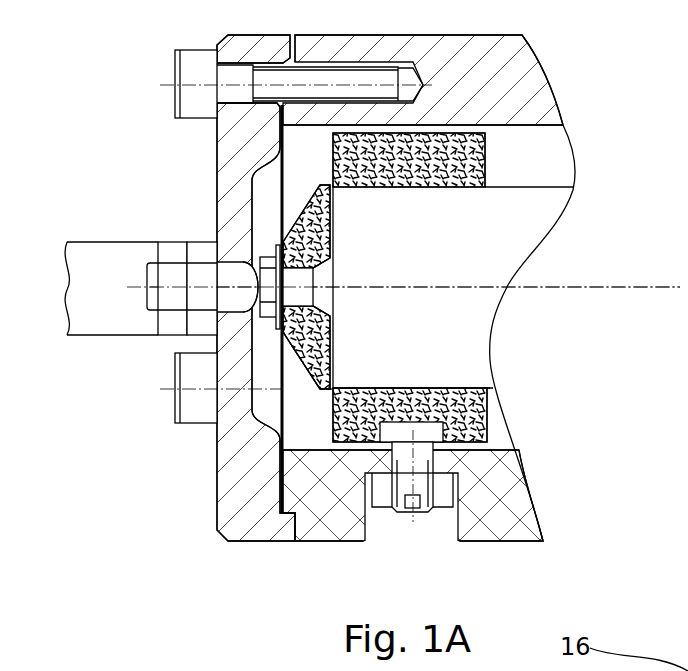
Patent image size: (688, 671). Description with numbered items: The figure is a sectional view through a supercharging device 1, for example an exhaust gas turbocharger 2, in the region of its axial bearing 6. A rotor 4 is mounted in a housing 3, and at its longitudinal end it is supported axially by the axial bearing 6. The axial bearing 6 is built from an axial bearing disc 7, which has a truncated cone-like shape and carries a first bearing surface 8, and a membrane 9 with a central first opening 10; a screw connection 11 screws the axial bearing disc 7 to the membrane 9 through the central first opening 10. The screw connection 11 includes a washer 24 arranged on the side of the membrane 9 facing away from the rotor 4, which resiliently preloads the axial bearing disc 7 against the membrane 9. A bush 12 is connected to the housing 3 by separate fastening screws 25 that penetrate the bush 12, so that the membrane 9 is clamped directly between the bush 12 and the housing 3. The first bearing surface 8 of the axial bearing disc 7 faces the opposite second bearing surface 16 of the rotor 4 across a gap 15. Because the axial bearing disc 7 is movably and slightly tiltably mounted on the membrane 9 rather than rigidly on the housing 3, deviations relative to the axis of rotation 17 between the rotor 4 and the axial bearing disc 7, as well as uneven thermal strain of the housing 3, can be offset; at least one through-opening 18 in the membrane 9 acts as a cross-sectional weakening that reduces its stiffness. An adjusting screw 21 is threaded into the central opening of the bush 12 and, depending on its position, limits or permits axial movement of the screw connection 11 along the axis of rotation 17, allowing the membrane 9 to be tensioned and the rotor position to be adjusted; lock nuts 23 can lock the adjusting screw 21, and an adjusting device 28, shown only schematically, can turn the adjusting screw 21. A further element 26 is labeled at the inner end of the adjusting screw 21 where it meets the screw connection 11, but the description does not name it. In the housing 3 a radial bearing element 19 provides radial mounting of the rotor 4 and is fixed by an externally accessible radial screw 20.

The supercharging device 1 is at (459, 270).
The exhaust gas turbocharger 2 is at (459, 270).
The housing 3 is at (470, 58).
The rotor 4 is at (526, 222).
The axial bearing 6 is at (305, 372).
The axial bearing disc 7 is at (282, 195).
The first bearing surface 8 is at (332, 198).
The membrane 9 is at (277, 148).
The central first opening 10 is at (330, 280).
The screw connection 11 is at (327, 303).
The bush 12 is at (236, 520).
The gap 15 is at (322, 392).
The second bearing surface 16 is at (330, 343).
The axis of rotation 17 is at (578, 290).
The through-opening 18 is at (280, 412).
The radial bearing element 19 is at (485, 143).
The radial screw 20 is at (408, 504).
The adjusting screw 21 is at (173, 305).
The lock nuts 23 is at (173, 325).
The washer 24 is at (278, 246).
The fastening screws 25 is at (193, 62).
The spherical end 26 is at (245, 310).
The adjusting device 28 is at (122, 302).